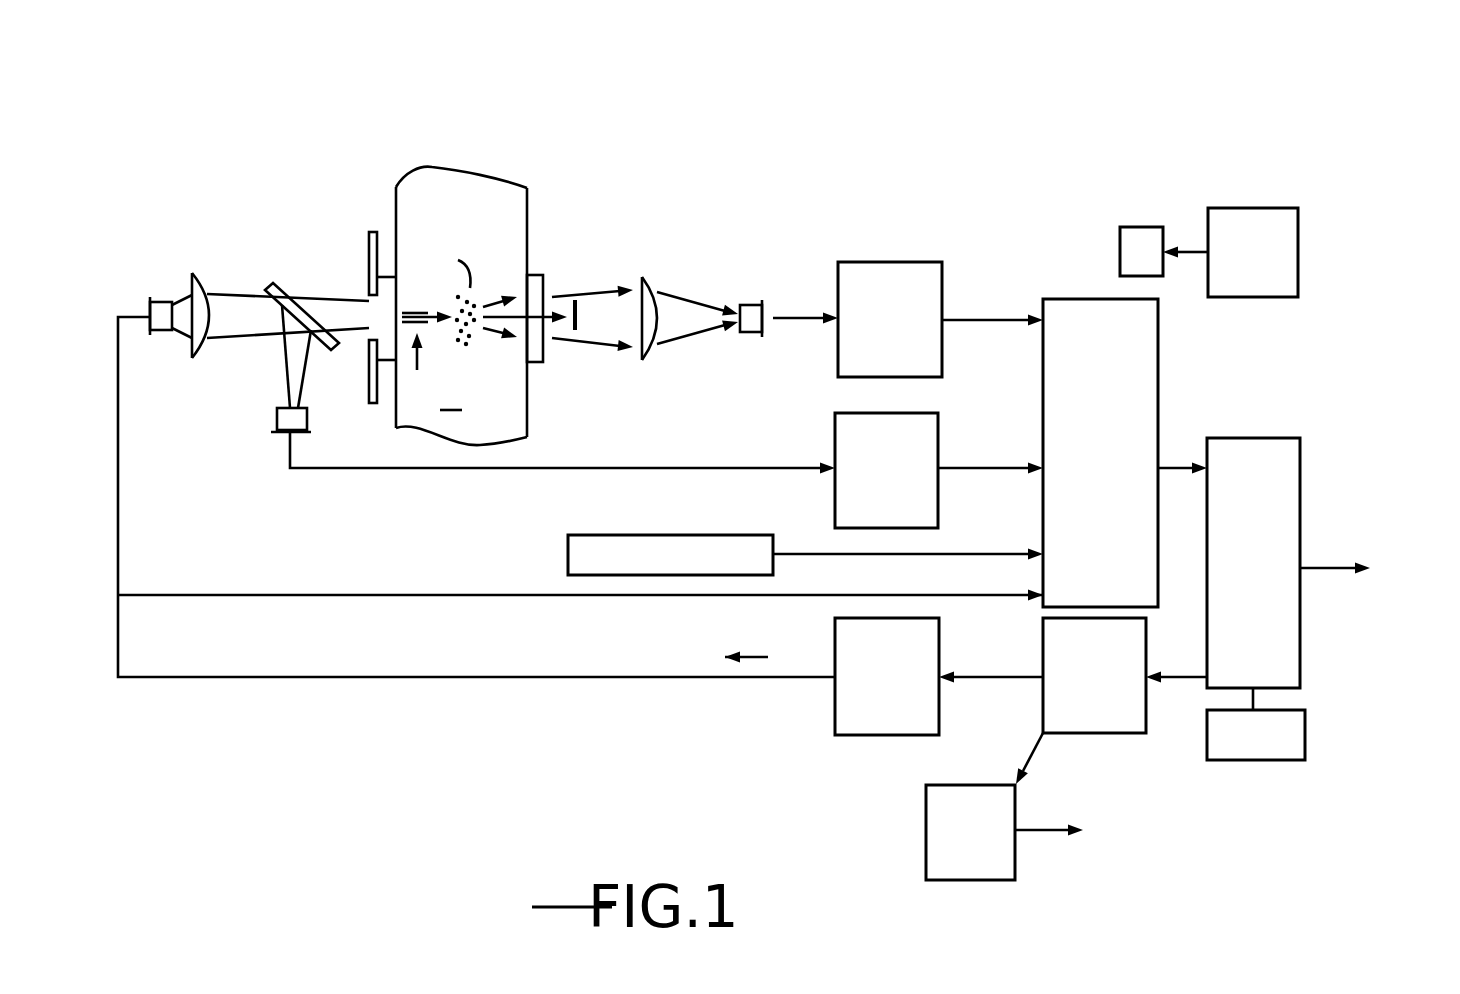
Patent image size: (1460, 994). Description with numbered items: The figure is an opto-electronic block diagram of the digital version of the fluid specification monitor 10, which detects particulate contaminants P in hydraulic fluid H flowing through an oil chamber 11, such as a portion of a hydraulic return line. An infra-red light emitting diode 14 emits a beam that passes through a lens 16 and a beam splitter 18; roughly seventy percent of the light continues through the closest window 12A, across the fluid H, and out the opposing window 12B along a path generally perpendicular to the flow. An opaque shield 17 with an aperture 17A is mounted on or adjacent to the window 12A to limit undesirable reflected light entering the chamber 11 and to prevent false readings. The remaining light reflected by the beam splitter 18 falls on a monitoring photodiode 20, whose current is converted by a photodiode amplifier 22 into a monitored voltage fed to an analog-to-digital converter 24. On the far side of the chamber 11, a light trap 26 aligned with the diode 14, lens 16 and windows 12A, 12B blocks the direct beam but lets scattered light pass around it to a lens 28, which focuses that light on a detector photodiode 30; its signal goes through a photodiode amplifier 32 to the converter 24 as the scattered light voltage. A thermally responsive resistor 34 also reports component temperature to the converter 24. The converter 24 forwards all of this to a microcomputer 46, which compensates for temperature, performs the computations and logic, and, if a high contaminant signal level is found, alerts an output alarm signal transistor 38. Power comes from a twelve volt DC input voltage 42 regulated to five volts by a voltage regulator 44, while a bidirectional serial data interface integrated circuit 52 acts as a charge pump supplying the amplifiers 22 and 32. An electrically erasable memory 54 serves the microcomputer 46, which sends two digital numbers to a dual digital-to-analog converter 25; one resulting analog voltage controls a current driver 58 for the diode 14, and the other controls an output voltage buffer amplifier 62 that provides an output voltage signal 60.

The fluid specification monitor 10 is at (530, 686).
The oil chamber 11 is at (422, 184).
The window 12A is at (388, 276).
The window 12B is at (538, 274).
The infra-red light emitting diode 14 is at (160, 302).
The lens 16 is at (192, 273).
The opaque shield 17 is at (369, 378).
The aperture 17A is at (369, 298).
The beam splitter 18 is at (274, 283).
The monitoring photodiode 20 is at (277, 422).
The photodiode amplifier 22 is at (905, 484).
The analog-to-digital converter 24 is at (1118, 478).
The dual digital-to-analog converter 25 is at (1108, 694).
The light trap 26 is at (577, 300).
The lens 28 is at (645, 277).
The detector photodiode 30 is at (746, 304).
The photodiode amplifier 32 is at (905, 341).
The thermally responsive resistor 34 is at (590, 538).
The output alarm signal transistor 38 is at (1358, 566).
The input voltage 42 is at (1313, 252).
The voltage regulator 44 is at (1270, 267).
The microcomputer 46 is at (1223, 574).
The bidirectional serial data interface integrated circuit 52 is at (1138, 226).
The electrically erasable memory 54 is at (1268, 745).
The current driver 58 is at (908, 696).
The output voltage signal 60 is at (1022, 833).
The output voltage buffer amplifier 62 is at (992, 849).